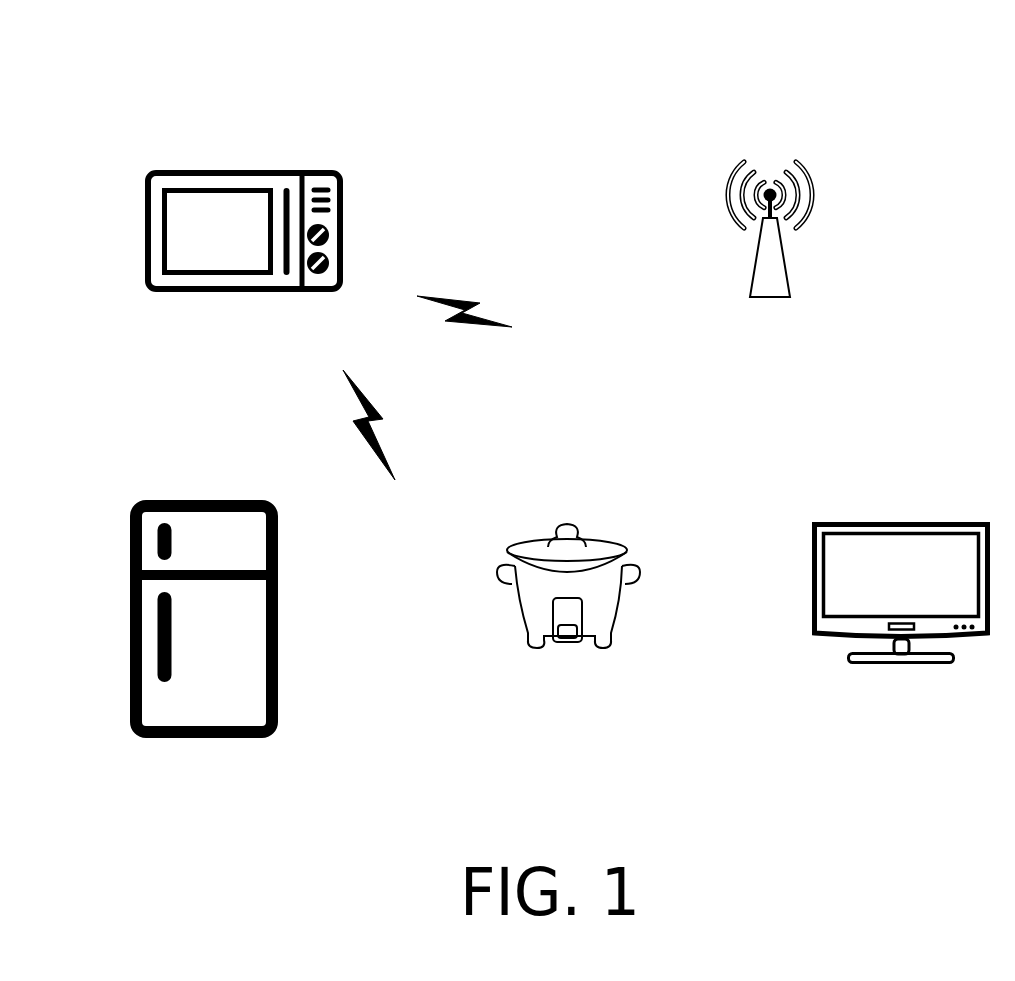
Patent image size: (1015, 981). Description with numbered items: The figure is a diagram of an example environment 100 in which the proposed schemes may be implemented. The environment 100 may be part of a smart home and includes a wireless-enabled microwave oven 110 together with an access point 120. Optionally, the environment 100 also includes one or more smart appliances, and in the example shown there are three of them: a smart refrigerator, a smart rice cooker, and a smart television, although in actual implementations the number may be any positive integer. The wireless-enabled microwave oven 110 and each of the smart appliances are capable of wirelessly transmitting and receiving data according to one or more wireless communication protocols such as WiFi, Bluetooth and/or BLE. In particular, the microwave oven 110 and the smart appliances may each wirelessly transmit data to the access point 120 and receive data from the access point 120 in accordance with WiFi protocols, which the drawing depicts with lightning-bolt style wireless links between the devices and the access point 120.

The environment 100 is at (544, 38).
The wireless-enabled microwave oven 110 is at (222, 170).
The access point 120 is at (770, 297).